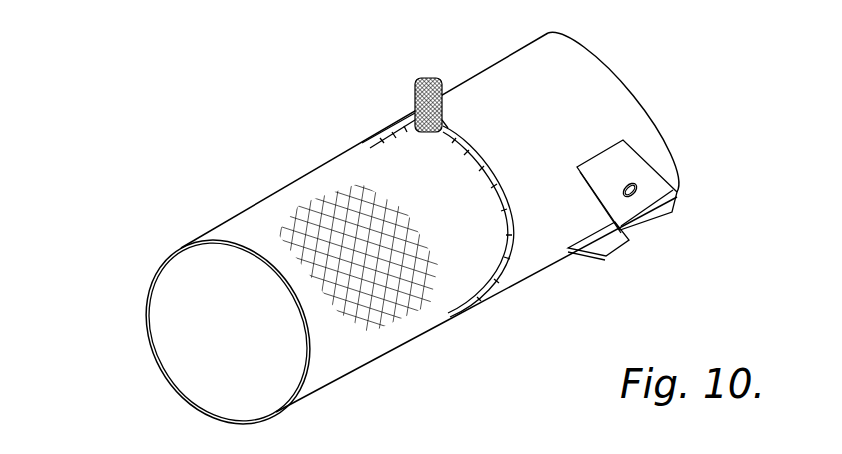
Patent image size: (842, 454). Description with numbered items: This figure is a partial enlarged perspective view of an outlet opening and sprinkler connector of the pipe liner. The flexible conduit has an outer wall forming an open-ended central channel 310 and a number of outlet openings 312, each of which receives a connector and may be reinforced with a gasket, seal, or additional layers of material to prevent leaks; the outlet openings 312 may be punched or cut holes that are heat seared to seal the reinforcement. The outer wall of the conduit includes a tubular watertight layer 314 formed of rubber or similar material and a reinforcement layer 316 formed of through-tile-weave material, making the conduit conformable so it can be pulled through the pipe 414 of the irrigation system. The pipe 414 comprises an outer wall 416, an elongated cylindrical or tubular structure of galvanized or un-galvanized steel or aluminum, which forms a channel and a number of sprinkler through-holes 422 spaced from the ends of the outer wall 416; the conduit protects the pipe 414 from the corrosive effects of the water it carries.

The open-ended central channel 310 is at (396, 136).
The outlet opening 312 is at (195, 301).
The tubular watertight layer 314 is at (282, 214).
The reinforcement layer 316 is at (407, 73).
The pipe 414 is at (602, 104).
The outer wall 416 is at (523, 261).
The sprinkler through-hole 422 is at (444, 123).